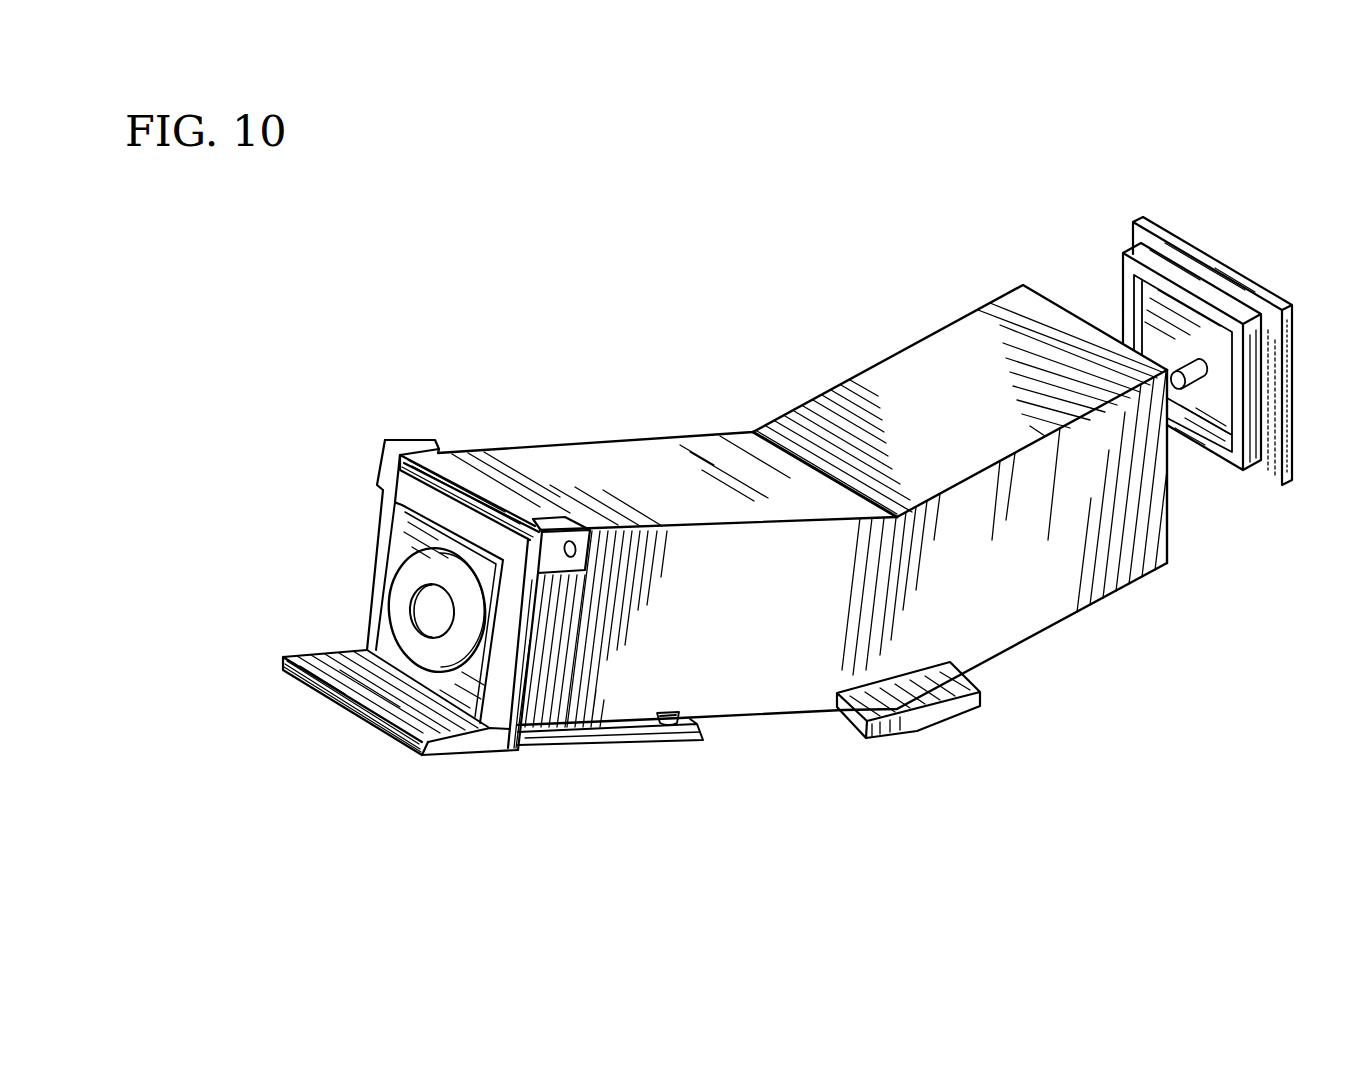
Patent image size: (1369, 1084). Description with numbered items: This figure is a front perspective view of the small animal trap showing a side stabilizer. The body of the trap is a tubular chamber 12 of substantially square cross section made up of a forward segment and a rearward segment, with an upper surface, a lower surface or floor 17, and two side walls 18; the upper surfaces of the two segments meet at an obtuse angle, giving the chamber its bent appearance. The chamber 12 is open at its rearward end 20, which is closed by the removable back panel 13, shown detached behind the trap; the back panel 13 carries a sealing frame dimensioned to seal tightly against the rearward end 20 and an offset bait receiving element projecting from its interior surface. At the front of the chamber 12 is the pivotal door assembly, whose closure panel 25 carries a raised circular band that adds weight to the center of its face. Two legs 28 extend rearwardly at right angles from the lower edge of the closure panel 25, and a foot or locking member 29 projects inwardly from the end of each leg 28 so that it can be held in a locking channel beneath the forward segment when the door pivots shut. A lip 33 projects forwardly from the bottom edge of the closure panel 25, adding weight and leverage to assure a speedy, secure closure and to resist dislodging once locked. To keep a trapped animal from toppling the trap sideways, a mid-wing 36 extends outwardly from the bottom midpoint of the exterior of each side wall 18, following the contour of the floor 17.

The chamber 12 is at (749, 583).
The removable back panel 13 is at (1262, 234).
The lower surface or floor 17 is at (990, 658).
The side walls 18 is at (823, 610).
The rearward end 20 is at (1168, 540).
The closure panel 25 is at (390, 636).
The legs 28 is at (612, 745).
The foot or locking member 29 is at (684, 727).
The lip 33 is at (427, 710).
The mid-wings 36 is at (940, 714).